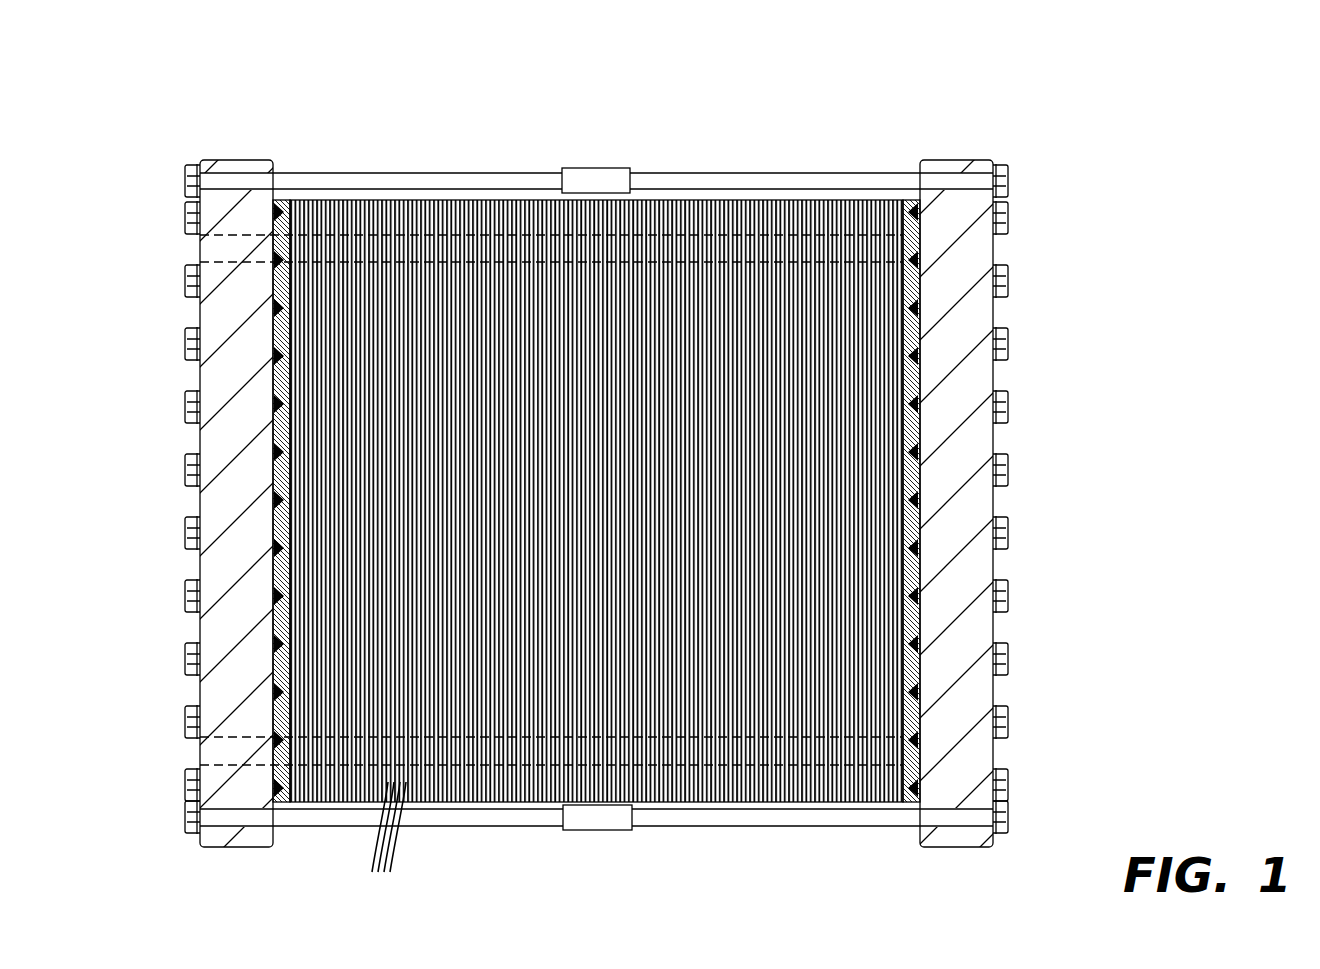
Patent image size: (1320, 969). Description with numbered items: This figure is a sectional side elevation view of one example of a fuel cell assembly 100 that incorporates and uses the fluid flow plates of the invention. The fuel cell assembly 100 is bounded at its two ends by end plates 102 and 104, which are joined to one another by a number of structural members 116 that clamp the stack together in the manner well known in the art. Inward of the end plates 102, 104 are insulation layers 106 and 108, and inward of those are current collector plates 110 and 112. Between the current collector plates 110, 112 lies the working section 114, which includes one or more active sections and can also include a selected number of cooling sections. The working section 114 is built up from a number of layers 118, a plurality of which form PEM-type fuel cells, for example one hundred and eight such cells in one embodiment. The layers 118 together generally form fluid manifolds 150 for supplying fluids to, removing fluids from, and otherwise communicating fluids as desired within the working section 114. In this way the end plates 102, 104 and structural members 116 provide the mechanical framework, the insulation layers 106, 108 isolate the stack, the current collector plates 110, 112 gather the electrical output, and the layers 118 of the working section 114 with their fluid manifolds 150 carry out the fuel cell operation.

The fuel cell assembly 100 is at (682, 42).
The end plate 102 is at (213, 168).
The end plate 104 is at (975, 168).
The insulation layer 106 is at (281, 200).
The insulation layer 108 is at (912, 196).
The current collector plate 110 is at (292, 202).
The current collector plate 112 is at (905, 202).
The working section 114 is at (691, 168).
The structural members 116 is at (531, 172).
The layers 118 is at (380, 844).
The fluid manifolds 150 is at (440, 240).